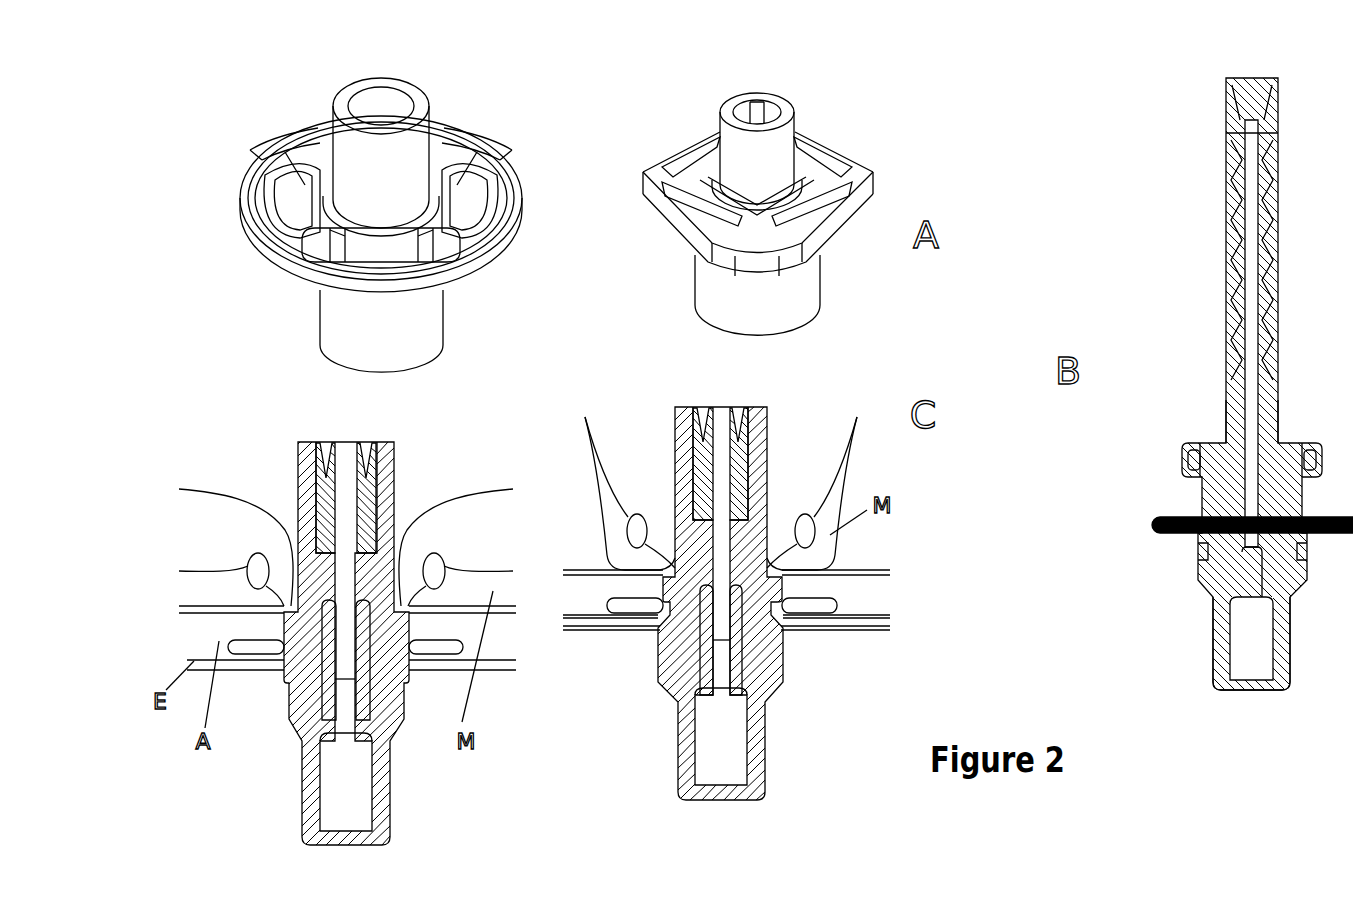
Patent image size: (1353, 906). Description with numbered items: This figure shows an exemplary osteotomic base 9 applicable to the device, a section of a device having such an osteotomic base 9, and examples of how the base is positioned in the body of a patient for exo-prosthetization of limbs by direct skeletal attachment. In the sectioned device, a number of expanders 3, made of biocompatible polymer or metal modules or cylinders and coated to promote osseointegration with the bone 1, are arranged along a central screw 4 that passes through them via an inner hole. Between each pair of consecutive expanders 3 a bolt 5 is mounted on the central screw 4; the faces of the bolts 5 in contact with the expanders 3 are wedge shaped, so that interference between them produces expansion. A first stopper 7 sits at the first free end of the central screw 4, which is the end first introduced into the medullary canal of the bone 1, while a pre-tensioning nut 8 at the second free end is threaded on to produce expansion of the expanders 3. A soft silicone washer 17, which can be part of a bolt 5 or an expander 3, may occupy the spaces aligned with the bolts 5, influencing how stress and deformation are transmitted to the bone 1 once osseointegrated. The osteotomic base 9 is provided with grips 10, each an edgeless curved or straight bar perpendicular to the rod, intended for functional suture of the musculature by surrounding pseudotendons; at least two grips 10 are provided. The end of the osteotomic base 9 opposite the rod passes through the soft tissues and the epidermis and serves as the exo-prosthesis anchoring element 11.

The bone 1 is at (298, 467).
The expanders 3 is at (1230, 185).
The central screw 4 is at (340, 469).
The bolts 5 is at (1227, 343).
The first stopper 7 is at (1253, 97).
The pre-tensioning nut 8 is at (289, 609).
The osteotomic base 9 is at (762, 170).
The grips 10 is at (303, 128).
The exo-prosthesis anchoring element 11 is at (1223, 649).
The soft silicone washer 17 is at (1221, 211).